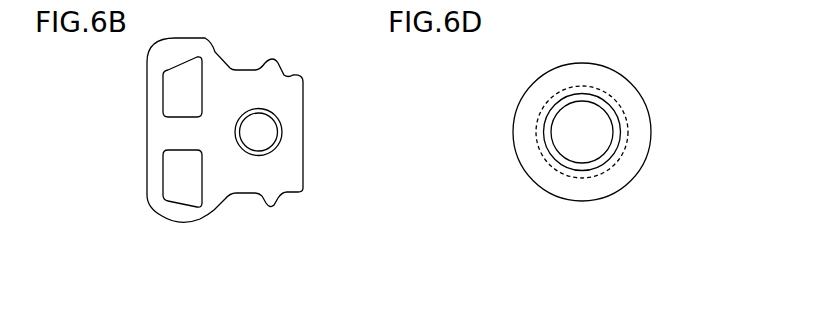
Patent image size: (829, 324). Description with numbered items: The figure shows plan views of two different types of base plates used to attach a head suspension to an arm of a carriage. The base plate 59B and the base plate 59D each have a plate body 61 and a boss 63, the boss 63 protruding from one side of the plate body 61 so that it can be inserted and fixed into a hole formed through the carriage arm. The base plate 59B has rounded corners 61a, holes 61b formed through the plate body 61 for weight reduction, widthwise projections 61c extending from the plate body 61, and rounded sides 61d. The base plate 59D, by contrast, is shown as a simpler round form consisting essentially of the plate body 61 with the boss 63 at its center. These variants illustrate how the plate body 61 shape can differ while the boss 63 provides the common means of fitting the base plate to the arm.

In FIG. 6B, the base plate 59B is at (323, 113).
In FIG. 6D, the base plate 59D is at (681, 118).
In FIG. 6B, the plate body 61 is at (281, 87).
In FIG. 6D, the plate body 61 is at (617, 78).
In FIG. 6B, the rounded corner 61a is at (303, 190).
In FIG. 6B, the hole 61b is at (177, 86).
In FIG. 6B, the widthwise projection 61c is at (273, 208).
In FIG. 6B, the rounded side 61d is at (178, 226).
In FIG. 6B, the boss 63 is at (282, 132).
In FIG. 6D, the boss 63 is at (613, 142).